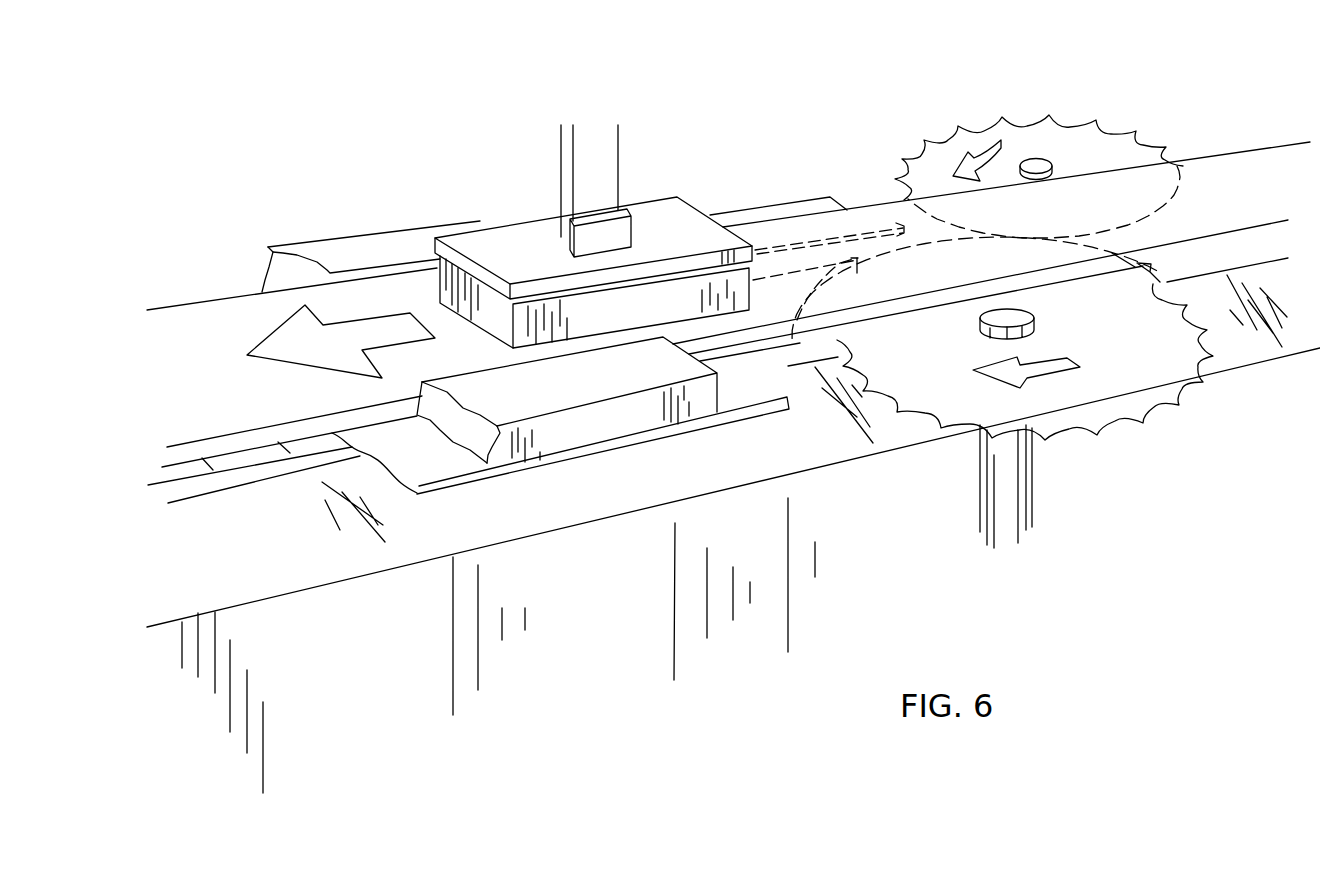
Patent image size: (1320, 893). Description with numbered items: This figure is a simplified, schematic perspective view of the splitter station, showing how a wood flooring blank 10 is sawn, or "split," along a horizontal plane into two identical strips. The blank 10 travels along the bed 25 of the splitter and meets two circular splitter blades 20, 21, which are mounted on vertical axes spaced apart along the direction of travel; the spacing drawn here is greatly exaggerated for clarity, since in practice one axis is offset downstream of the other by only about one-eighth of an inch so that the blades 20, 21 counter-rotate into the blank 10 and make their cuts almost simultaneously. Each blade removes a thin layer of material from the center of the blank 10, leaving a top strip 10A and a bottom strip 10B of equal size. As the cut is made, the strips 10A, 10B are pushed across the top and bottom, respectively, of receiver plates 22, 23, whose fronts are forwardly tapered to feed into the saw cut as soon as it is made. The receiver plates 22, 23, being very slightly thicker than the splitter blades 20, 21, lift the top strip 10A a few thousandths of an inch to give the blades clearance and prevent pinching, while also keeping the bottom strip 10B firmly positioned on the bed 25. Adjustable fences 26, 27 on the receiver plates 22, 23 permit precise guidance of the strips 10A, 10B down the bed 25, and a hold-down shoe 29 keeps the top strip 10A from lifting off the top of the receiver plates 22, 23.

The blank 10 is at (1230, 197).
The top strip 10A is at (223, 318).
The bottom strip 10B is at (278, 470).
The circular splitter blade 20 is at (1085, 141).
The circular splitter blade 21 is at (1170, 375).
The receiver plate 22 is at (773, 211).
The receiver plate 23 is at (760, 381).
The bed 25 is at (697, 470).
The adjustable fence 26 is at (373, 247).
The adjustable fence 27 is at (576, 427).
The hold-down shoe 29 is at (658, 225).